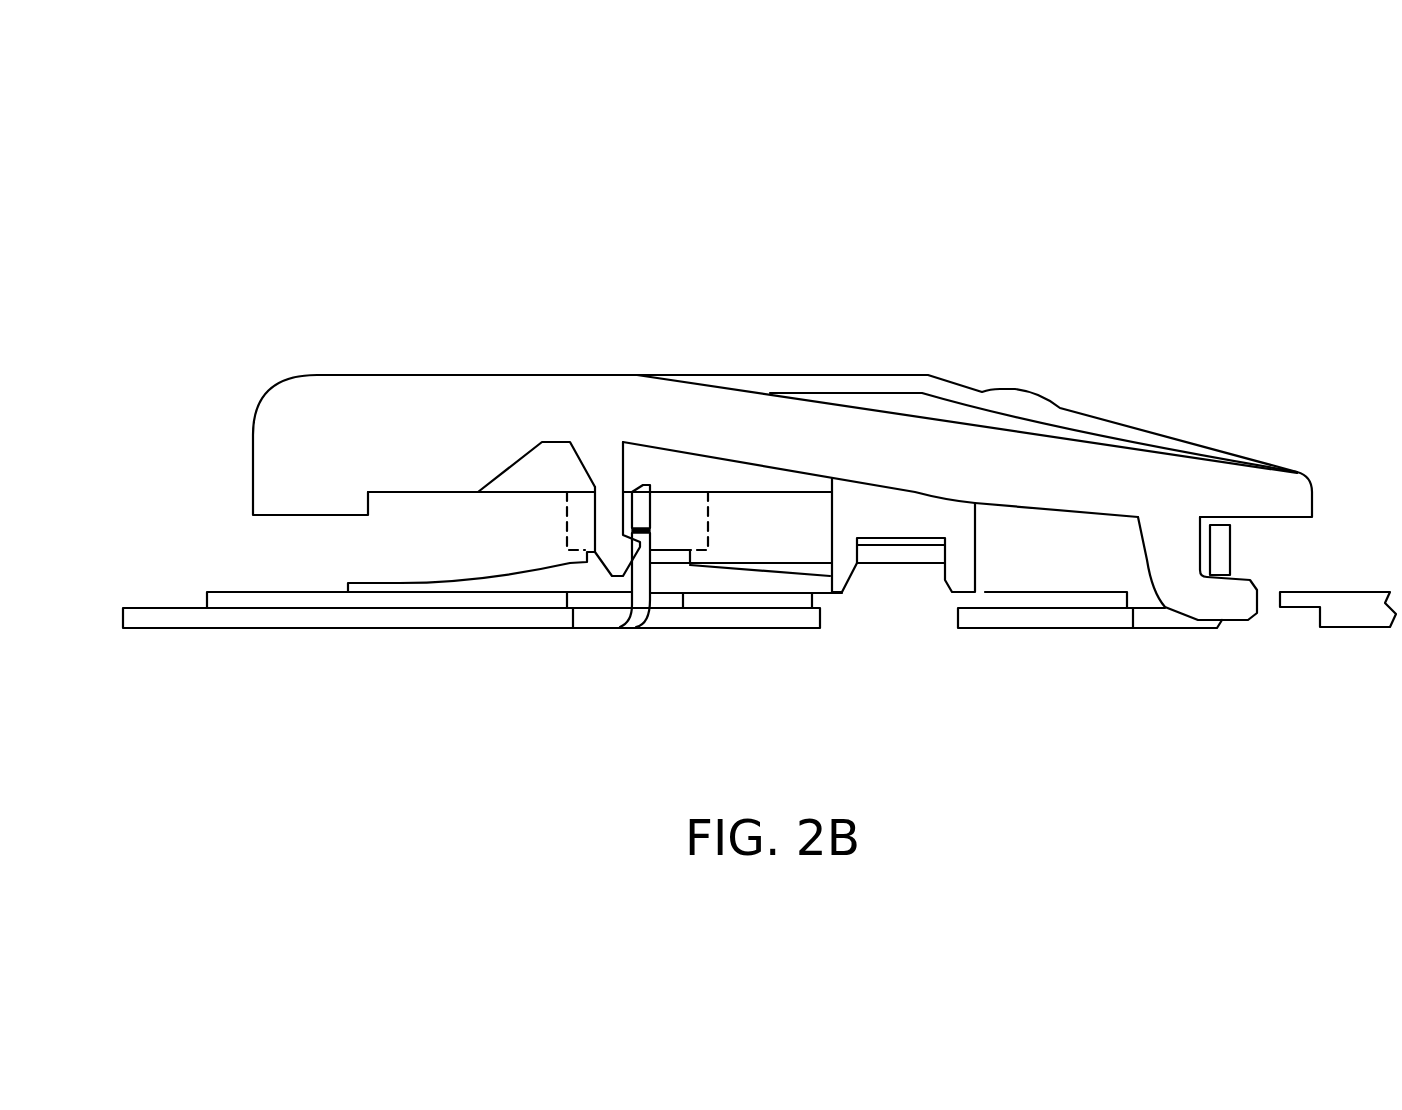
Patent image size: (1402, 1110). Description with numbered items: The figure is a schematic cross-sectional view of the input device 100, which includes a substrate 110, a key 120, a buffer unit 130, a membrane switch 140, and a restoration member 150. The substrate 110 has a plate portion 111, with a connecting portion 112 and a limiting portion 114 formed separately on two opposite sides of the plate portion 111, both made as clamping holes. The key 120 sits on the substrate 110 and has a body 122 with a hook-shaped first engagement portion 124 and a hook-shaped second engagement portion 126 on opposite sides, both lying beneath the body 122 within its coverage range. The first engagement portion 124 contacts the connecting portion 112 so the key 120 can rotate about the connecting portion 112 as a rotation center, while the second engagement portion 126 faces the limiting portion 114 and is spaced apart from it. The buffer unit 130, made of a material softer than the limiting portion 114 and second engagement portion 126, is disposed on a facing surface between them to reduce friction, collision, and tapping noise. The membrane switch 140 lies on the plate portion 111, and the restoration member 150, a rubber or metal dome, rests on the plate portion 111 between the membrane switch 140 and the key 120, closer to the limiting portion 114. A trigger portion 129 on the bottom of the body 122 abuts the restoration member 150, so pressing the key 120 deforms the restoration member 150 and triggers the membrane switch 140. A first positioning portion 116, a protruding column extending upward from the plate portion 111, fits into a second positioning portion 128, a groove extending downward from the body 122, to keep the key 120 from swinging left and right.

The input device 100 is at (130, 70).
The substrate 110 is at (293, 70).
The plate portion 111 is at (150, 618).
The connecting portion 112 is at (1220, 555).
The limiting portion 114 is at (643, 503).
The first positioning portion 116 is at (907, 547).
The key 120 is at (456, 70).
The body 122 is at (1110, 475).
The first engagement portion 124 is at (1192, 598).
The second engagement portion 126 is at (612, 565).
The second positioning portion 128 is at (947, 566).
The trigger portion 129 is at (698, 515).
The buffer unit 130 is at (652, 531).
The membrane switch 140 is at (250, 600).
The restoration member 150 is at (668, 557).